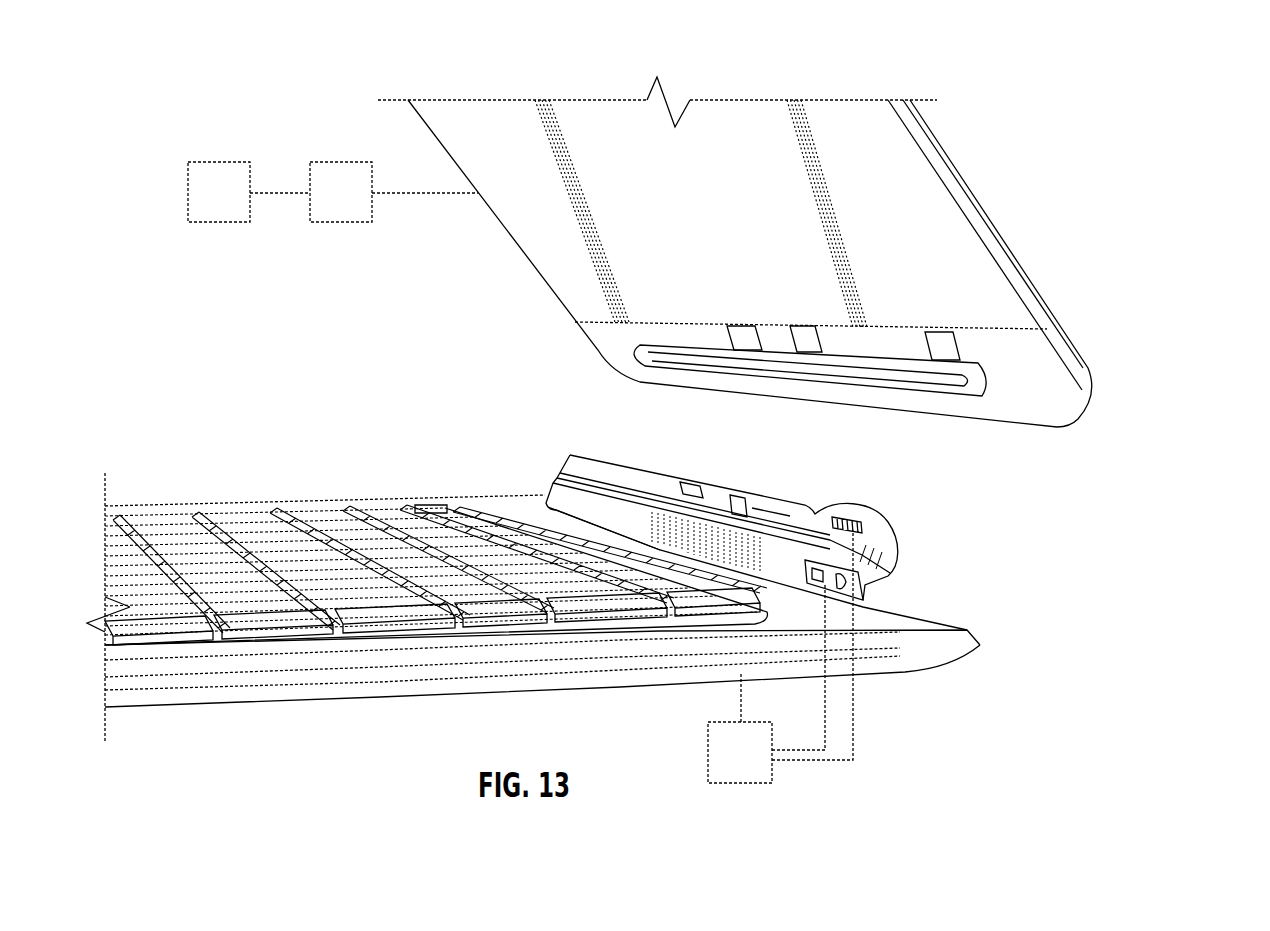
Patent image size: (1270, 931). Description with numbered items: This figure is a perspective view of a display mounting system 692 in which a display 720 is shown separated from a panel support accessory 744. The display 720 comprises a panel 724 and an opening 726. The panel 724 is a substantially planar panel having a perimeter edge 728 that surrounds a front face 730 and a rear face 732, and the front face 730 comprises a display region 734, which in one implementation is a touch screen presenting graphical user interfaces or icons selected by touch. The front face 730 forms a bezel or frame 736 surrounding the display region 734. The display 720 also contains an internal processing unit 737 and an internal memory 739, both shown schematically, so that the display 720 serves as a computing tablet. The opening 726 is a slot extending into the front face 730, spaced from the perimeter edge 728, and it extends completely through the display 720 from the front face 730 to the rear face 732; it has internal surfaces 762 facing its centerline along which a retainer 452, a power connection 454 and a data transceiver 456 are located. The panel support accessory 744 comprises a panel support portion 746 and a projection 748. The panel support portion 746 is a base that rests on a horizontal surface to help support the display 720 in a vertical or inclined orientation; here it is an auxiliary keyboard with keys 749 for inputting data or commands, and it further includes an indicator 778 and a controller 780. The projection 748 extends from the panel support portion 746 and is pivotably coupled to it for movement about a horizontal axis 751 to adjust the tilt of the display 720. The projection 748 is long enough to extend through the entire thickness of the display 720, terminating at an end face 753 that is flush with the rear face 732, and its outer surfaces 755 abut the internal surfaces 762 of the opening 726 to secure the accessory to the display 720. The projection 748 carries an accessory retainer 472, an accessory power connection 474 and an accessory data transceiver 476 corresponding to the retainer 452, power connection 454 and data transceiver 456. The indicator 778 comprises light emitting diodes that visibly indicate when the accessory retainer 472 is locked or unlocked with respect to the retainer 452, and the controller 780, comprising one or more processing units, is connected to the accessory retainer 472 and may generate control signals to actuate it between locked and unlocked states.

The computing device 692 is at (1117, 175).
The display 720 is at (1028, 260).
The panel 724 is at (993, 223).
The opening 726 is at (957, 397).
The perimeter edge 728 is at (1061, 332).
The front face 730 is at (545, 282).
The rear face 732 is at (985, 138).
The display region 734 is at (907, 182).
The bezel or frame 736 is at (958, 200).
The processing unit 737 is at (340, 222).
The internal memory 739 is at (234, 222).
The panel support accessory 744 is at (975, 643).
The panel support portion 746 is at (360, 500).
The projection 748 is at (568, 456).
The keys 749 is at (255, 500).
The horizontal axis 751 is at (980, 646).
The end face 753 is at (893, 552).
The outer surfaces 755 is at (752, 508).
The internal surfaces 762 is at (917, 385).
The indicator 778 is at (828, 516).
The controller 780 is at (745, 783).
The retainer 452 is at (1090, 400).
The power connection 454 is at (808, 352).
The data transceiver 456 is at (736, 350).
The accessory retainer 472 is at (867, 512).
The accessory power connection 474 is at (740, 495).
The accessory data transceiver 476 is at (688, 481).